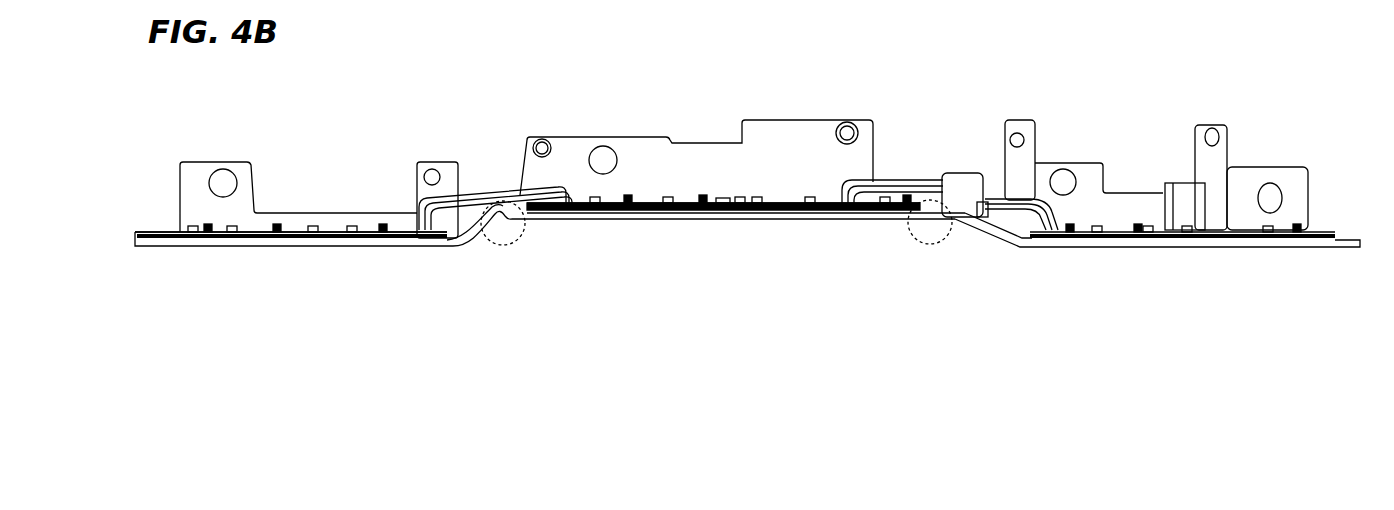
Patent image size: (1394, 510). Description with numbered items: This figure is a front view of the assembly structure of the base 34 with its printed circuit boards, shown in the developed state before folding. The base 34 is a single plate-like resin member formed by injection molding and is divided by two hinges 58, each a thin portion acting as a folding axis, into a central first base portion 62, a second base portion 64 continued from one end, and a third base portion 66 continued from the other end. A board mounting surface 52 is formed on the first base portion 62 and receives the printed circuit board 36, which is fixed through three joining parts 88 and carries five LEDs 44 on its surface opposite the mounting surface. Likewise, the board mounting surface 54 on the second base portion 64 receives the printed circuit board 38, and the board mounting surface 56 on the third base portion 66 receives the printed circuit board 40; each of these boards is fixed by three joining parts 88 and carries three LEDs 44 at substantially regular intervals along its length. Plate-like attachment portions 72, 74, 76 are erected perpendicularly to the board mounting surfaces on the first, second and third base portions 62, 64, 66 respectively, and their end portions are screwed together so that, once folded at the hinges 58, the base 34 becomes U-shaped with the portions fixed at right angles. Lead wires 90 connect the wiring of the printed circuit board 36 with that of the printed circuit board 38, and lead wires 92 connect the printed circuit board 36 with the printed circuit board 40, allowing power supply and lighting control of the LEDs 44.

The base 34 is at (1044, 119).
The printed circuit board 36 is at (781, 203).
The printed circuit board 38 is at (1118, 193).
The printed circuit board 40 is at (292, 228).
The LED 44 is at (193, 226).
The board mounting surface 52 is at (723, 200).
The board mounting surface 54 is at (1165, 205).
The board mounting surface 56 is at (330, 230).
The hinge 58 is at (503, 228).
The first base portion 62 is at (715, 220).
The second base portion 64 is at (1162, 248).
The third base portion 66 is at (315, 247).
The attachment portion 72 is at (825, 120).
The attachment portion 74 is at (1265, 167).
The attachment portion 76 is at (438, 162).
The joining part 88 is at (208, 224).
The lead wire 90 is at (982, 158).
The lead wire 92 is at (485, 196).